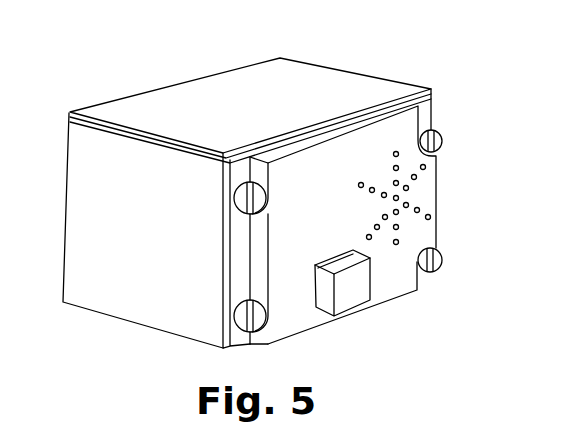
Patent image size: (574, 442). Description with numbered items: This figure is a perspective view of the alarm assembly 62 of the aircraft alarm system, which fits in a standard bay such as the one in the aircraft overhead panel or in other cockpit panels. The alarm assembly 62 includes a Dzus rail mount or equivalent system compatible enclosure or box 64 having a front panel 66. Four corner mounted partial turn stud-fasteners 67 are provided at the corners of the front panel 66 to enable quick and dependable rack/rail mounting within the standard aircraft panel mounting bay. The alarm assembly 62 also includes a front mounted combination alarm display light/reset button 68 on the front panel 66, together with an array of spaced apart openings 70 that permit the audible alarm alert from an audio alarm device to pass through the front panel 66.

The alarm assembly 62 is at (142, 335).
The enclosure 64 is at (140, 105).
The front panel 66 is at (283, 330).
The partial turn stud-fasteners 67 is at (435, 127).
The combination alarm display light/reset button 68 is at (348, 303).
The spaced apart openings 70 is at (408, 200).